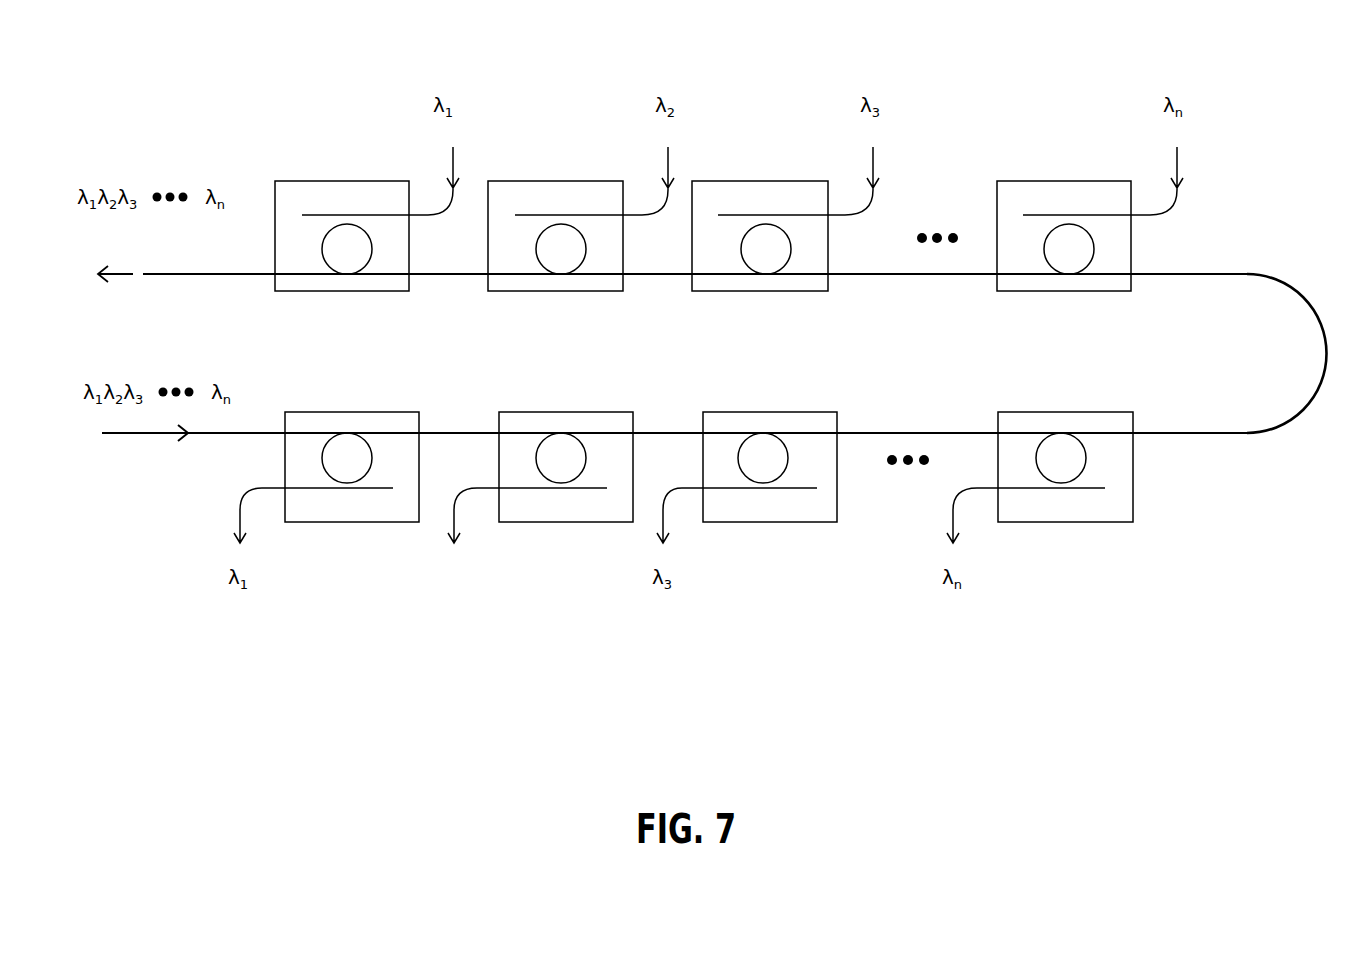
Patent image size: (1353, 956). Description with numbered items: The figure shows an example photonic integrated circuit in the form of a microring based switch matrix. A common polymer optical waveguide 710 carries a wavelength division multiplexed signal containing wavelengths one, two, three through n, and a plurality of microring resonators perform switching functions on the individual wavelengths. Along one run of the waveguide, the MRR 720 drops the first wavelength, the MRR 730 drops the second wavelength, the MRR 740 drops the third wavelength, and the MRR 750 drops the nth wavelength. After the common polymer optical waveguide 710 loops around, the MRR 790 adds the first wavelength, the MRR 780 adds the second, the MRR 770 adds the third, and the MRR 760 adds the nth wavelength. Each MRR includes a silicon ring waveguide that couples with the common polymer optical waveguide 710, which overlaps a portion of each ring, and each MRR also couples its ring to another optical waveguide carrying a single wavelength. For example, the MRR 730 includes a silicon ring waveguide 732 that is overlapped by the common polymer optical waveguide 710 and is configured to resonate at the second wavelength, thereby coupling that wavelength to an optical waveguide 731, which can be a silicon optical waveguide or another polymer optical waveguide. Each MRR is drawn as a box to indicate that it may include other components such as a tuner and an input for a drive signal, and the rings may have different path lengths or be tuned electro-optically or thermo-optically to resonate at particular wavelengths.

The common polymer optical waveguide 710 is at (1291, 418).
The MRR 720 is at (343, 523).
The MRR 730 is at (587, 523).
The optical waveguide 731 is at (456, 516).
The silicon ring waveguide 732 is at (586, 457).
The MRR 740 is at (767, 523).
The MRR 750 is at (1068, 523).
The MRR 760 is at (1068, 181).
The MRR 770 is at (765, 181).
The MRR 780 is at (561, 181).
The MRR 790 is at (322, 181).